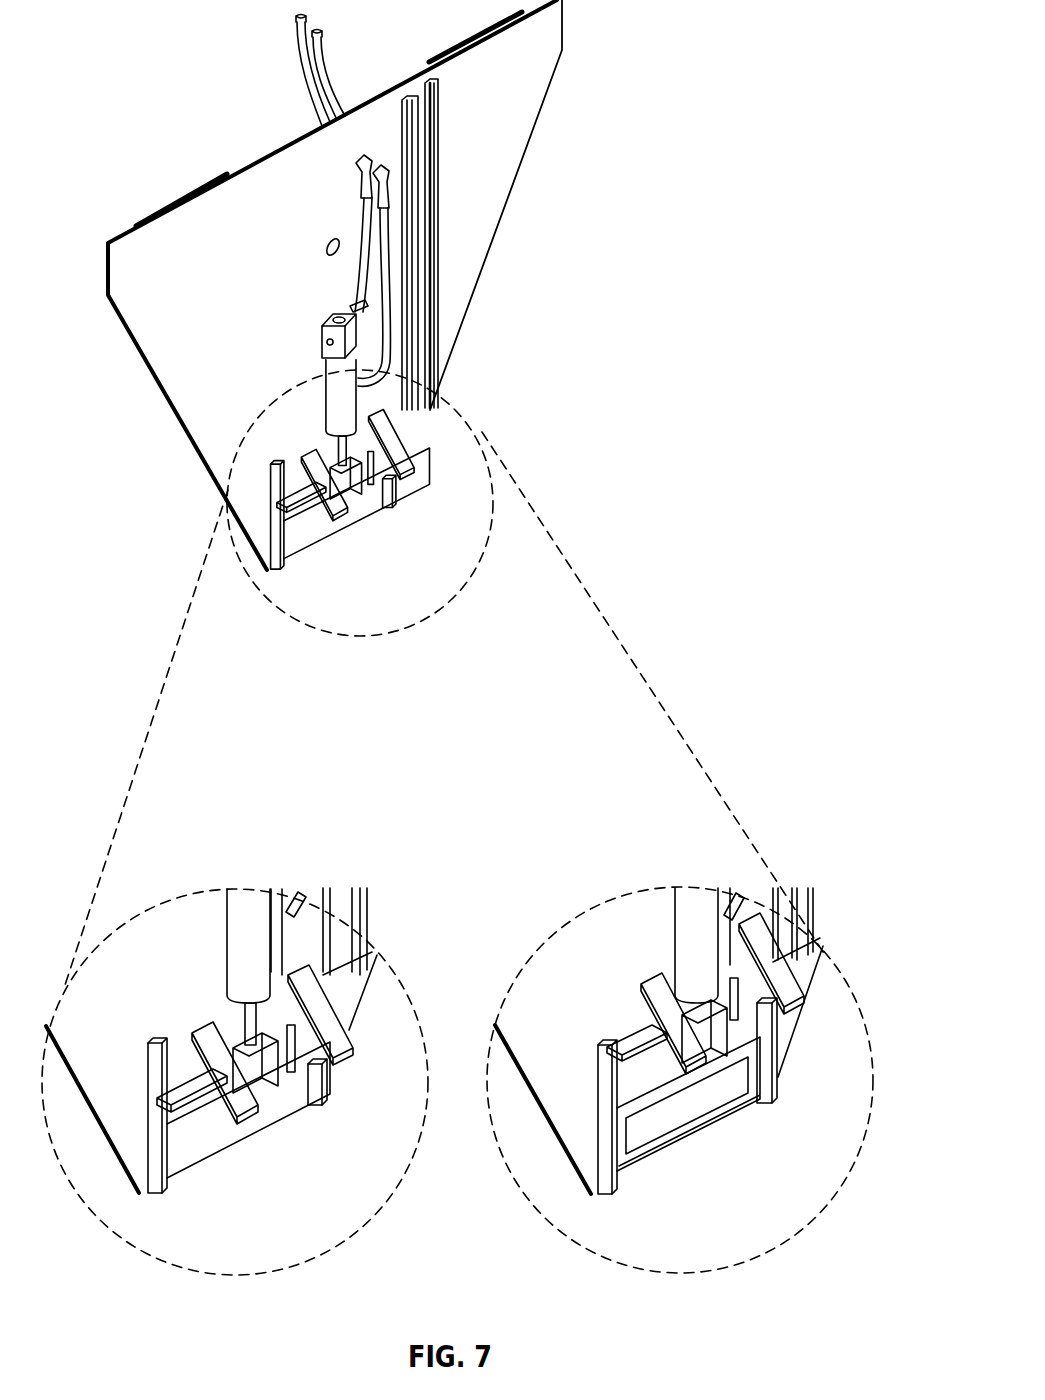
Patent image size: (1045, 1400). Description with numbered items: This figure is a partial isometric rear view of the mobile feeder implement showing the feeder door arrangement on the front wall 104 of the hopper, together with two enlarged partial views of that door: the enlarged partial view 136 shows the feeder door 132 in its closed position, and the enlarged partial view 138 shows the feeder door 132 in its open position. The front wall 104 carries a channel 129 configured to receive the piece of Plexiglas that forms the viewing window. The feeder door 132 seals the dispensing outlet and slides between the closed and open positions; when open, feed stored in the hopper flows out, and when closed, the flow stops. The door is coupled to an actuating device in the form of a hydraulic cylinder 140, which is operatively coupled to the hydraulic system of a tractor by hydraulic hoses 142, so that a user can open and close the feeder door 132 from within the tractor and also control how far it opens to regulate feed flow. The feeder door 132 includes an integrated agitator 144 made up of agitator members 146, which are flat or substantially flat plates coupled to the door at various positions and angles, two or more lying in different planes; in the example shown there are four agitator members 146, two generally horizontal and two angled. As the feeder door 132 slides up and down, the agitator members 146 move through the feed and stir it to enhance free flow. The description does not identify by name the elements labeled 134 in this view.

The front wall 104 is at (530, 80).
The channel 129 is at (438, 160).
The feeder door 132 is at (203, 1142).
The posts 134 is at (153, 1037).
The enlarged partial view 136 is at (343, 924).
The enlarged partial view 138 is at (849, 980).
The hydraulic cylinder 140 is at (327, 400).
The hydraulic hoses 142 is at (323, 63).
The agitator 144 is at (307, 518).
The agitator members 146 is at (761, 946).